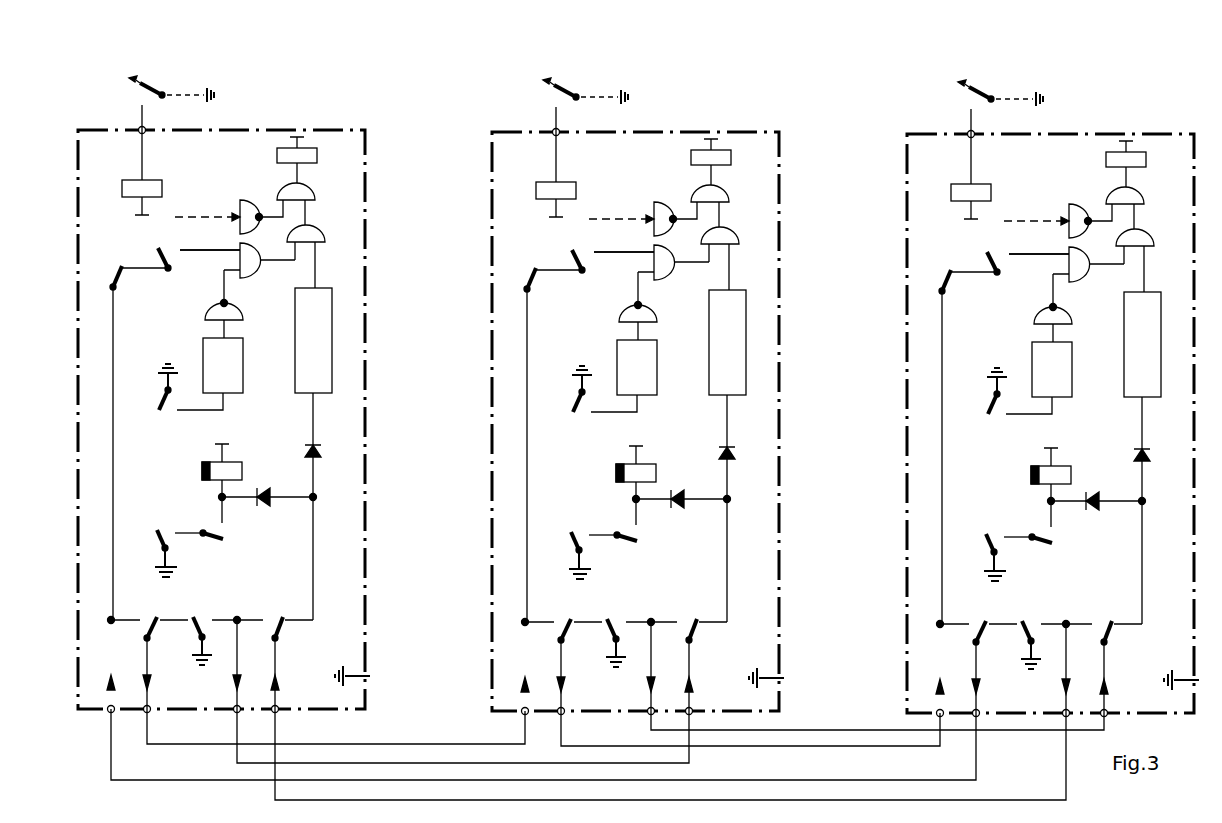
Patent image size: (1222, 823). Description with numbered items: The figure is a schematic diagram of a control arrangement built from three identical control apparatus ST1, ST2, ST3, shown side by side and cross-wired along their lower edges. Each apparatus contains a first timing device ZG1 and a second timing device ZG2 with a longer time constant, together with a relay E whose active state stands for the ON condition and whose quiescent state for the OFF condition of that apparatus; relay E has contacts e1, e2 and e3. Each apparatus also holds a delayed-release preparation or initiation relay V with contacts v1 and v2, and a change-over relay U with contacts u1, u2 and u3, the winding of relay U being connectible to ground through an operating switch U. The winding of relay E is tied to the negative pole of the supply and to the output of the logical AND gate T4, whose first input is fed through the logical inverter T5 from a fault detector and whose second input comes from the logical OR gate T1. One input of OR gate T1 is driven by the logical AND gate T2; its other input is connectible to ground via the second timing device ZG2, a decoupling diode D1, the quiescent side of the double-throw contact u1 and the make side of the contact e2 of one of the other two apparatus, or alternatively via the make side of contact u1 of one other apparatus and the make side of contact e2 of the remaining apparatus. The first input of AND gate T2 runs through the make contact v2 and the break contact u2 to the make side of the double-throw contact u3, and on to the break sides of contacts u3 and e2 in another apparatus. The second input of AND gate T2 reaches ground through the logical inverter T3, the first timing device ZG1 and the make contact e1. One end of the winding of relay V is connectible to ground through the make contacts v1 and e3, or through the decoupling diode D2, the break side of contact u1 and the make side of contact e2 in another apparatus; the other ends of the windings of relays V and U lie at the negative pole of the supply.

The control apparatus ST1 is at (235, 394).
The control apparatus ST2 is at (649, 396).
The control apparatus ST3 is at (1064, 398).
The change-over relay U is at (159, 145).
The relay E is at (287, 160).
The logical OR gate T1 is at (320, 256).
The logical AND gate T2 is at (237, 254).
The logical inverter T3 is at (238, 304).
The logical AND gate T4 is at (301, 203).
The logical inverter T5 is at (219, 205).
The first timing device ZG1 is at (210, 374).
The second timing device ZG2 is at (313, 366).
The decoupling diode D1 is at (329, 530).
The decoupling diode D2 is at (264, 485).
The delayed-release preparation relay V is at (249, 483).
The double-throw contact u1 is at (283, 651).
The break contact u2 is at (132, 432).
The double-throw contact u3 is at (149, 651).
The make contact v1 is at (214, 535).
The make contact v2 is at (197, 247).
The make contact e1 is at (167, 400).
The double-throw contact e2 is at (225, 651).
The make contact e3 is at (164, 544).